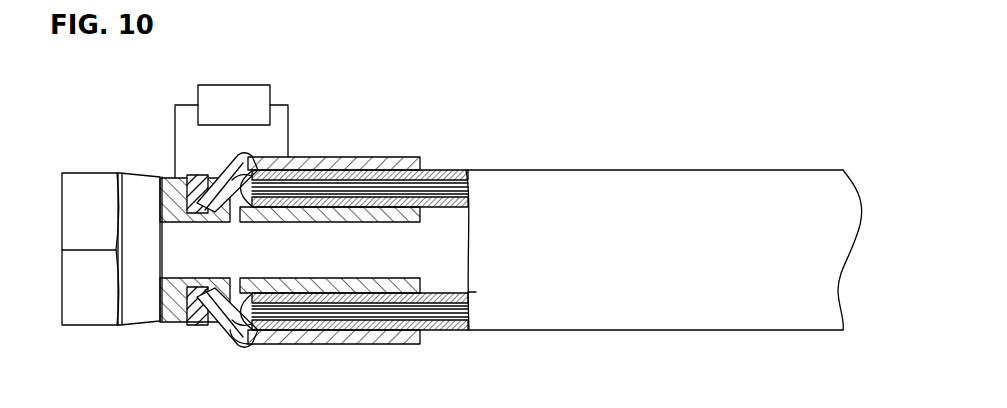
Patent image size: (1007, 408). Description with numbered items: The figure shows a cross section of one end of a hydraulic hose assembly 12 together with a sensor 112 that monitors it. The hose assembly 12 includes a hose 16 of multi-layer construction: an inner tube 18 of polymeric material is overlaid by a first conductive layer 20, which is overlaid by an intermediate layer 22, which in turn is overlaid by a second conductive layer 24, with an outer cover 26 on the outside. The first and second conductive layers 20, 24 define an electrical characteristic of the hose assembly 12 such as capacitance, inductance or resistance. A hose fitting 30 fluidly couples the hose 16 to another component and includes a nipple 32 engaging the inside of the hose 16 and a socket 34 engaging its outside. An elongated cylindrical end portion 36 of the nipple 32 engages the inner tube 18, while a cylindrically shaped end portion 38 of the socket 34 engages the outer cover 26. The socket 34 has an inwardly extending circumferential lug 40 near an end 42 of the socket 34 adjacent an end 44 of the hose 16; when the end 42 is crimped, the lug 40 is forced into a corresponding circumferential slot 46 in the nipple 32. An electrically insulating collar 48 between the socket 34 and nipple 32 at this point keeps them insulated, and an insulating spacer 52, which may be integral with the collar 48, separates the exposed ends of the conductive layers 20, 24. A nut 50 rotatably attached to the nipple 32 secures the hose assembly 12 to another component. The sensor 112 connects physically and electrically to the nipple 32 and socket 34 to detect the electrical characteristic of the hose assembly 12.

The hose assembly 12 is at (420, 92).
The hose 16 is at (456, 166).
The inner tube 18 is at (462, 292).
The first conductive layer 20 is at (384, 193).
The intermediate layer 22 is at (359, 187).
The second conductive layer 24 is at (319, 178).
The outer cover 26 is at (457, 333).
The hose fitting 30 is at (175, 334).
The nipple 32 is at (346, 229).
The socket 34 is at (327, 351).
The elongated cylindrical end portion 36 is at (386, 221).
The cylindrically shaped end portion 38 is at (396, 345).
The lug 40 is at (207, 212).
The end of the socket 42 is at (245, 345).
The end of the hose 44 is at (231, 197).
The slot 46 is at (204, 279).
The collar 48 is at (196, 324).
The nut 50 is at (92, 328).
The spacer 52 is at (233, 290).
The sensor 112 is at (235, 85).